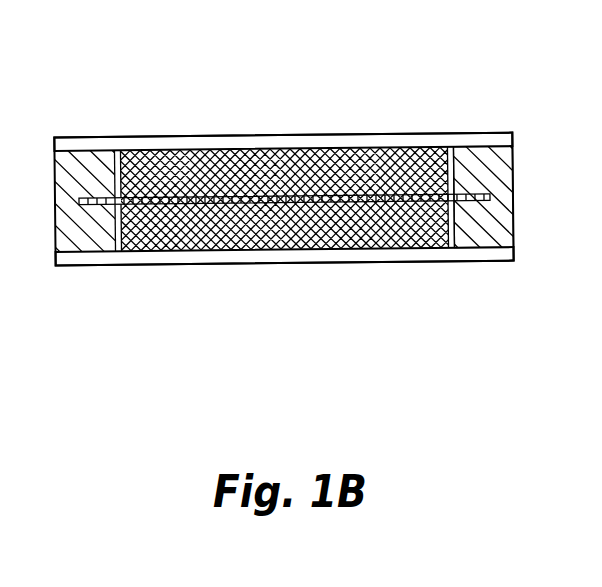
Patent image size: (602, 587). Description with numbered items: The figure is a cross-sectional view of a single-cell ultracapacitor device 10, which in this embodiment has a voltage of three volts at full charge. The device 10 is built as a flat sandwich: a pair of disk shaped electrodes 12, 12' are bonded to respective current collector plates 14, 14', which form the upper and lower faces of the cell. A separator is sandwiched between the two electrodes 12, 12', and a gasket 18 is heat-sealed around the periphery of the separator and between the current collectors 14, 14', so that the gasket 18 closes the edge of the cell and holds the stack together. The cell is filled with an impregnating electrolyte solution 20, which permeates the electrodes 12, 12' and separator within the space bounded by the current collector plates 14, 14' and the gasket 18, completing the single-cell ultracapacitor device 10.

The single-cell ultracapacitor device 10 is at (286, 110).
The disk shaped electrode 12 is at (280, 166).
The disk shaped electrode 12' is at (280, 253).
The current collector plate 14 is at (283, 113).
The current collector plate 14' is at (285, 304).
The gasket 18 is at (512, 155).
The impregnating electrolyte solution 20 is at (453, 247).